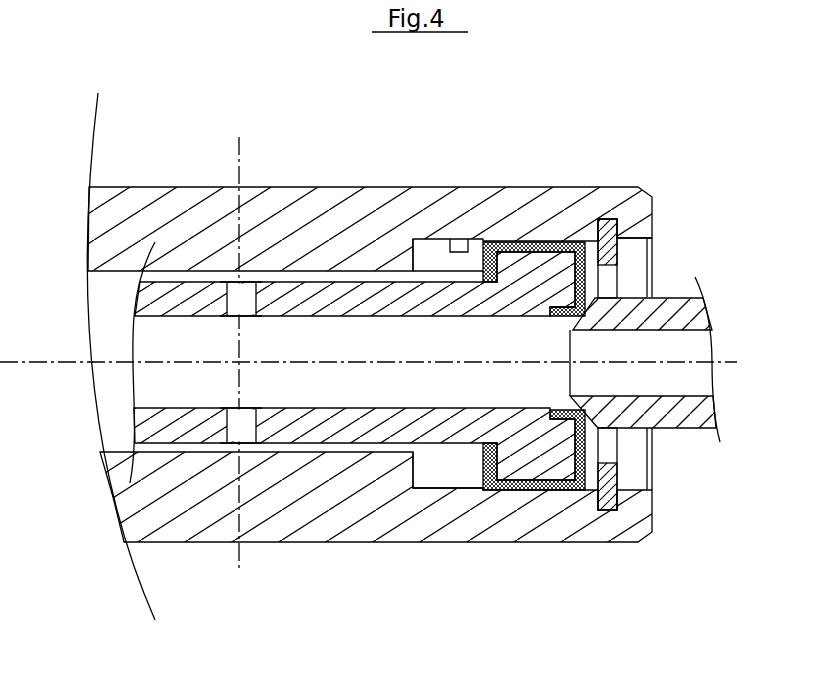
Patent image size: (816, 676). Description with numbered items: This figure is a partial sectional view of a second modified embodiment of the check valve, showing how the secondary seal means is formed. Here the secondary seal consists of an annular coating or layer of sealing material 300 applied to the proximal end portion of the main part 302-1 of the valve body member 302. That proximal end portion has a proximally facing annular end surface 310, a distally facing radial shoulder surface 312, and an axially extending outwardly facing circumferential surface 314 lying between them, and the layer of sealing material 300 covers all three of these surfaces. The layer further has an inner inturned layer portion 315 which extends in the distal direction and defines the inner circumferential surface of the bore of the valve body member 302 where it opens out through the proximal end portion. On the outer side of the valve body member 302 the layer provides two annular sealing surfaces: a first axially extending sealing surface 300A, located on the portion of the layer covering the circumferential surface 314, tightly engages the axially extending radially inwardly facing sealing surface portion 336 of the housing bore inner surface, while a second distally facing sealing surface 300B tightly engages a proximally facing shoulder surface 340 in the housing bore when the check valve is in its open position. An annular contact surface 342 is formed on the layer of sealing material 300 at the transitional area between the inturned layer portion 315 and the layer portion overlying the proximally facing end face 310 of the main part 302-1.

The layer of sealing material 300 is at (560, 247).
The first axially extending sealing surface 300A is at (537, 490).
The second distally facing sealing surface 300B is at (483, 468).
The valve body member 302 is at (277, 515).
The main part of the valve body member 302-1 is at (143, 425).
The proximally facing annular end surface 310 is at (587, 281).
The distally facing radial shoulder surface 312 is at (411, 268).
The axially extending outwardly facing circumferential surface 314 is at (340, 408).
The inner inturned layer portion 315 is at (575, 311).
The axially extending radially inwardly facing sealing surface portion 336 is at (468, 248).
The proximally facing shoulder surface 340 is at (428, 252).
The annular contact surface 342 is at (590, 397).